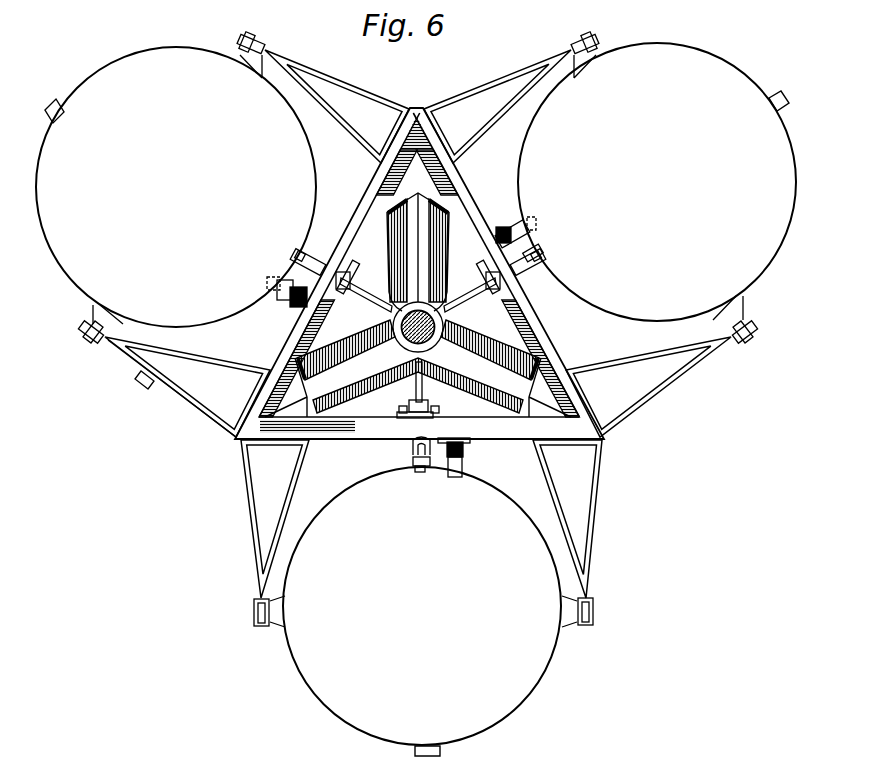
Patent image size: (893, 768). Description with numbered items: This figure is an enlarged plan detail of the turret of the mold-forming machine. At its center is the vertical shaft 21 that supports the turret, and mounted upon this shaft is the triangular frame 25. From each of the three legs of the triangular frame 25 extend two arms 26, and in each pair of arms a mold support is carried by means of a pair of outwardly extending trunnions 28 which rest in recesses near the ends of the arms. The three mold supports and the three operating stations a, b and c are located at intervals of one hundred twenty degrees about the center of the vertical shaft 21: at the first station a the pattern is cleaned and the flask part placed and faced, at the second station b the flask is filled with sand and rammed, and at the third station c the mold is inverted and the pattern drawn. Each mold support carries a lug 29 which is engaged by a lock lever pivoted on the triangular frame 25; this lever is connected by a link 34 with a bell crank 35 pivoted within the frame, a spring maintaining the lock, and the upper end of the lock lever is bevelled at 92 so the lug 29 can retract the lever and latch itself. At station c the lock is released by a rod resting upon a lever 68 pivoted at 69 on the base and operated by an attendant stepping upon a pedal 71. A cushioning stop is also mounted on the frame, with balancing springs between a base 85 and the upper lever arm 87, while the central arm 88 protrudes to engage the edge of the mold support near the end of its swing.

The vertical shaft 21 is at (425, 330).
The triangular frame 25 is at (362, 217).
The arms 26 is at (586, 40).
The trunnions 28 is at (250, 42).
The lug 29 is at (540, 251).
The link 34 is at (413, 445).
The bell crank 35 is at (362, 292).
The lever 68 is at (172, 396).
The pivot 69 is at (780, 92).
The pedal 71 is at (140, 388).
The base 85 is at (505, 225).
The upper lever arm 87 is at (290, 297).
The central arm 88 is at (282, 300).
The bevelled upper end 92 is at (330, 240).
The first operating station a is at (706, 75).
The second operating station b is at (540, 632).
The third operating station c is at (303, 162).